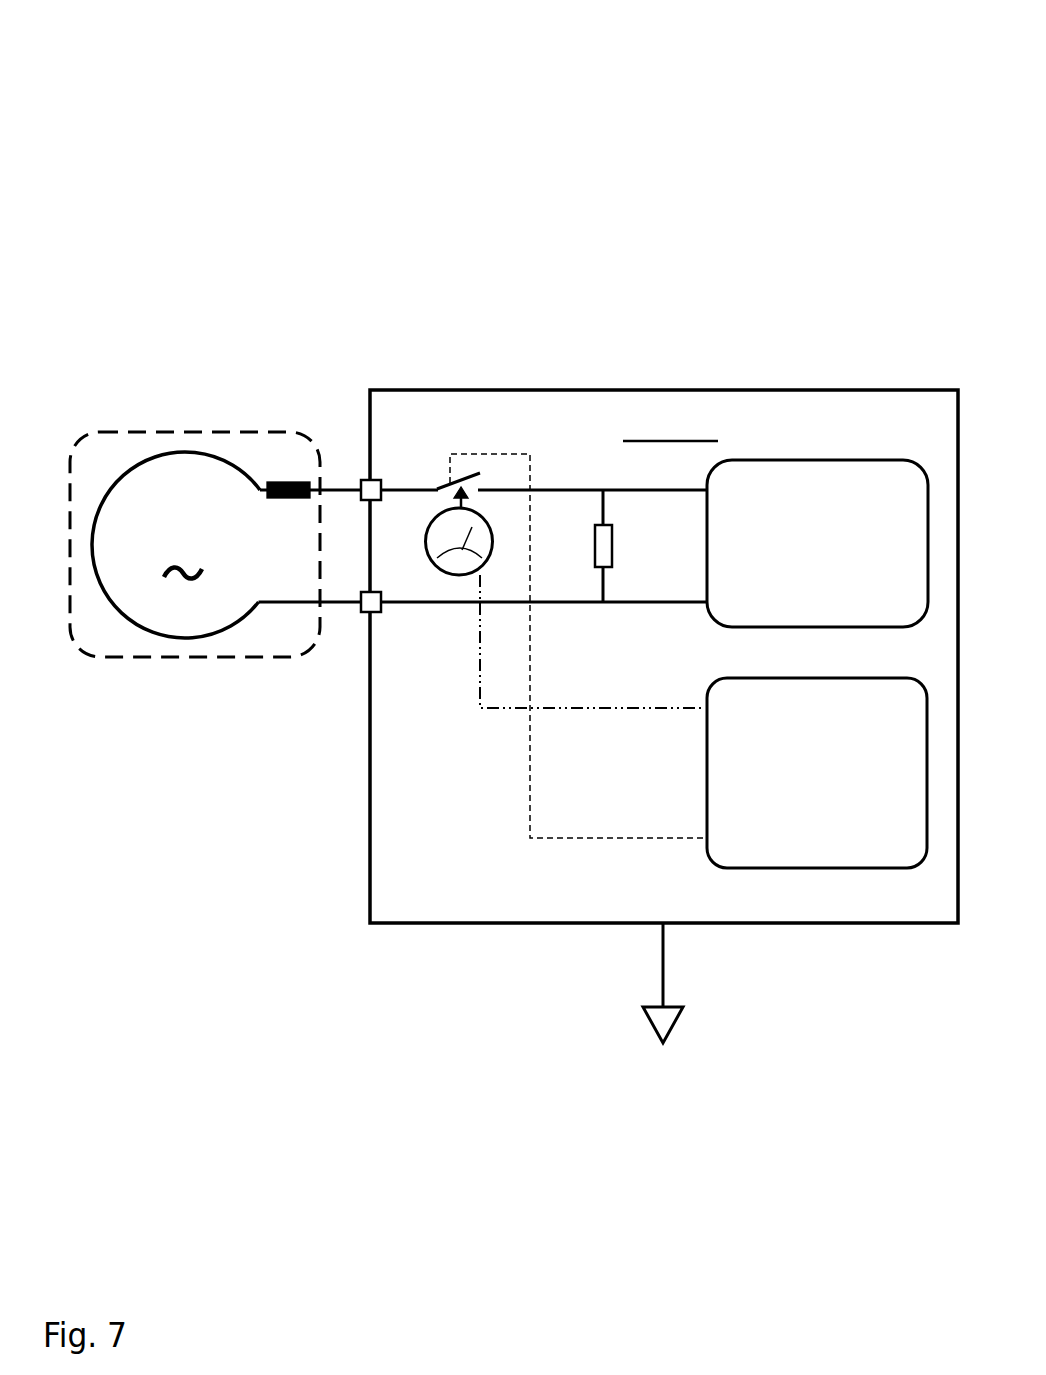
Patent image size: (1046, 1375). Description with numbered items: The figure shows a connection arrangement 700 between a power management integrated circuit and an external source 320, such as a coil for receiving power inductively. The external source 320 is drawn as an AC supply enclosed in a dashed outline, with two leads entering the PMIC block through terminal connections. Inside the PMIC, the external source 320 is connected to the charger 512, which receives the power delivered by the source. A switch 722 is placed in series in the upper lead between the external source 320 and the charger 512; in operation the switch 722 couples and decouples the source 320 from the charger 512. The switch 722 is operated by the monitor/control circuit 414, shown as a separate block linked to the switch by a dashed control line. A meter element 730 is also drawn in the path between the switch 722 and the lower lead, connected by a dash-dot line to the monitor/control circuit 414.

The charging system 700 is at (514, 524).
The external source 320 is at (128, 627).
The switch 722 is at (445, 480).
The current meter 730 is at (453, 563).
The charger 512 is at (845, 600).
The monitor/control circuit 414 is at (843, 792).